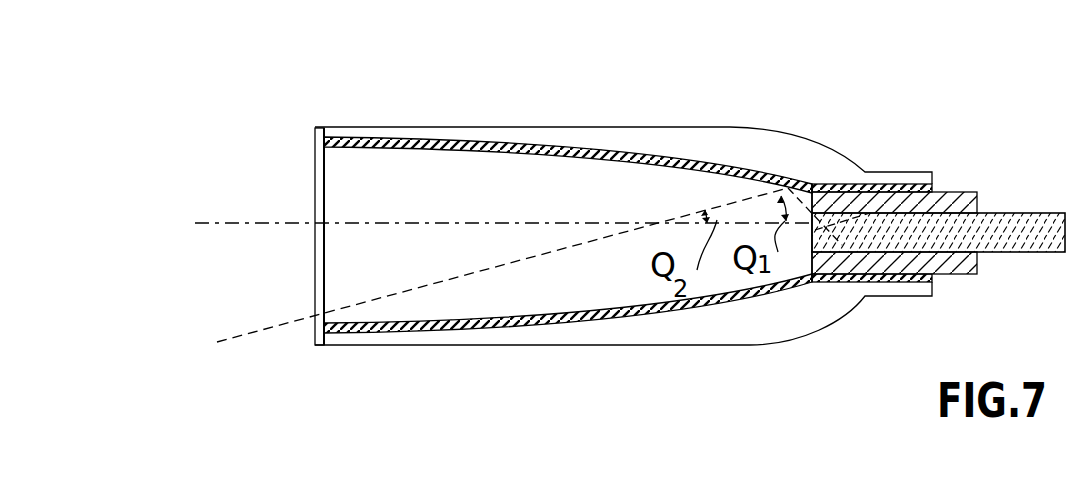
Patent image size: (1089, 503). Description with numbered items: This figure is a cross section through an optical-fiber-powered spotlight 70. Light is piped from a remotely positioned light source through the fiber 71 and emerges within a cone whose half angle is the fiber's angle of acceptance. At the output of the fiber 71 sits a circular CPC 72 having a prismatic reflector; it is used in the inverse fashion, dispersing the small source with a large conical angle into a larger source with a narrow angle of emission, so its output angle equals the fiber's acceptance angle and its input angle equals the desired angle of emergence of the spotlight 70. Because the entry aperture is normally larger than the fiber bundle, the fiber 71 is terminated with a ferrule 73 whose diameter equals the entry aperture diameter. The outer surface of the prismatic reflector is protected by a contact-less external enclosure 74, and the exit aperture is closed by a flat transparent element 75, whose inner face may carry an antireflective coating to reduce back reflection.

The spotlight 70 is at (657, 101).
The fiber 71 is at (1043, 212).
The CPC 72 is at (568, 325).
The ferrule 73 is at (972, 192).
The external enclosure 74 is at (452, 127).
The flat transparent element 75 is at (317, 241).